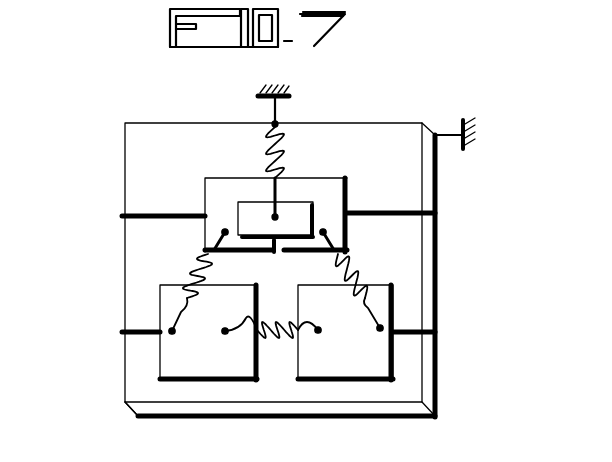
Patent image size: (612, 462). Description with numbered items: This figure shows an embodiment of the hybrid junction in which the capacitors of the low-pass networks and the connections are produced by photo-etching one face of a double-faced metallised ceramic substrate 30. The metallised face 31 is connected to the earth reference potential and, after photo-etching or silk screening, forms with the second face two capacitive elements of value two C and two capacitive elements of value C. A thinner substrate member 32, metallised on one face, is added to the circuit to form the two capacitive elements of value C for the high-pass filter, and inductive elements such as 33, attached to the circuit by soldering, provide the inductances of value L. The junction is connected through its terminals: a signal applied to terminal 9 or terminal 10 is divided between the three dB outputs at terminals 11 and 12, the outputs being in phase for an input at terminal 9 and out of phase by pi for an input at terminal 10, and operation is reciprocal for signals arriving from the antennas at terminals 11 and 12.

The terminal 9 is at (138, 327).
The terminal 10 is at (413, 201).
The terminal 11 is at (415, 312).
The terminal 12 is at (122, 213).
The double-faced metallised ceramic substrate 30 is at (140, 375).
The metallised face 31 is at (440, 388).
The thinner substrate member 32 is at (293, 210).
The inductive element 33 is at (357, 272).